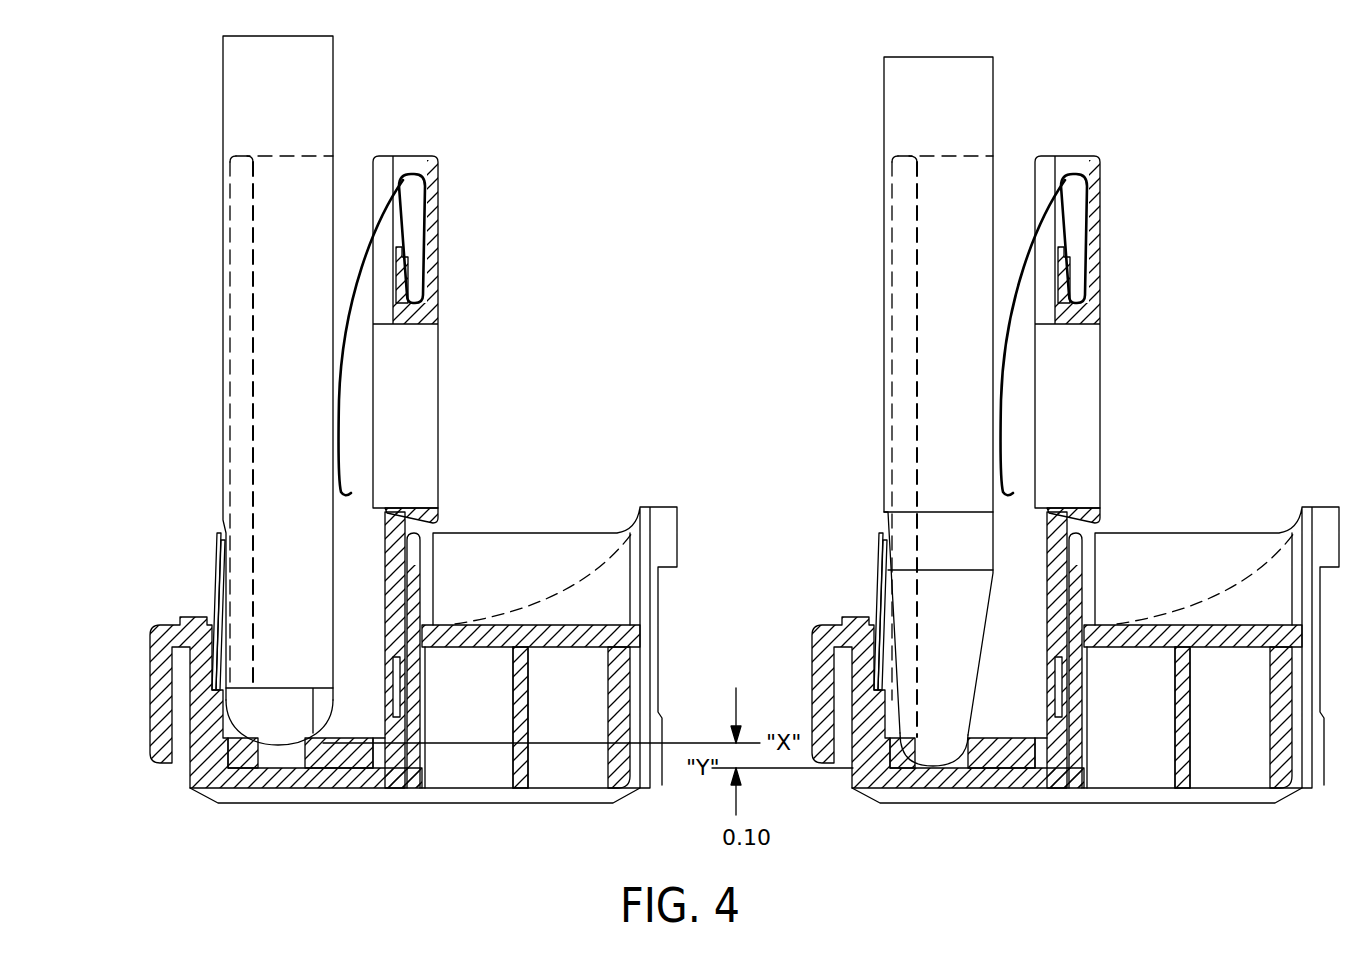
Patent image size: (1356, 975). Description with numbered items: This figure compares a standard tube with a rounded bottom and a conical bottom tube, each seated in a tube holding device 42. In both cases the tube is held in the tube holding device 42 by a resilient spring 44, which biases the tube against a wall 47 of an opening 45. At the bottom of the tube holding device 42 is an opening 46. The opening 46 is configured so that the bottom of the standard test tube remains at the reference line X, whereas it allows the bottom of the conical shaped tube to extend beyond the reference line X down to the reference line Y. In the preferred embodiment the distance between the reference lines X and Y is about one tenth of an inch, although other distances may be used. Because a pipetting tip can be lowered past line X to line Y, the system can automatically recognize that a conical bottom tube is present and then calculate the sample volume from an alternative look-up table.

The tube holding device 42 is at (438, 305).
The resilient spring 44 is at (407, 175).
The opening 45 is at (222, 580).
The opening 46 is at (273, 760).
The wall 47 is at (217, 552).